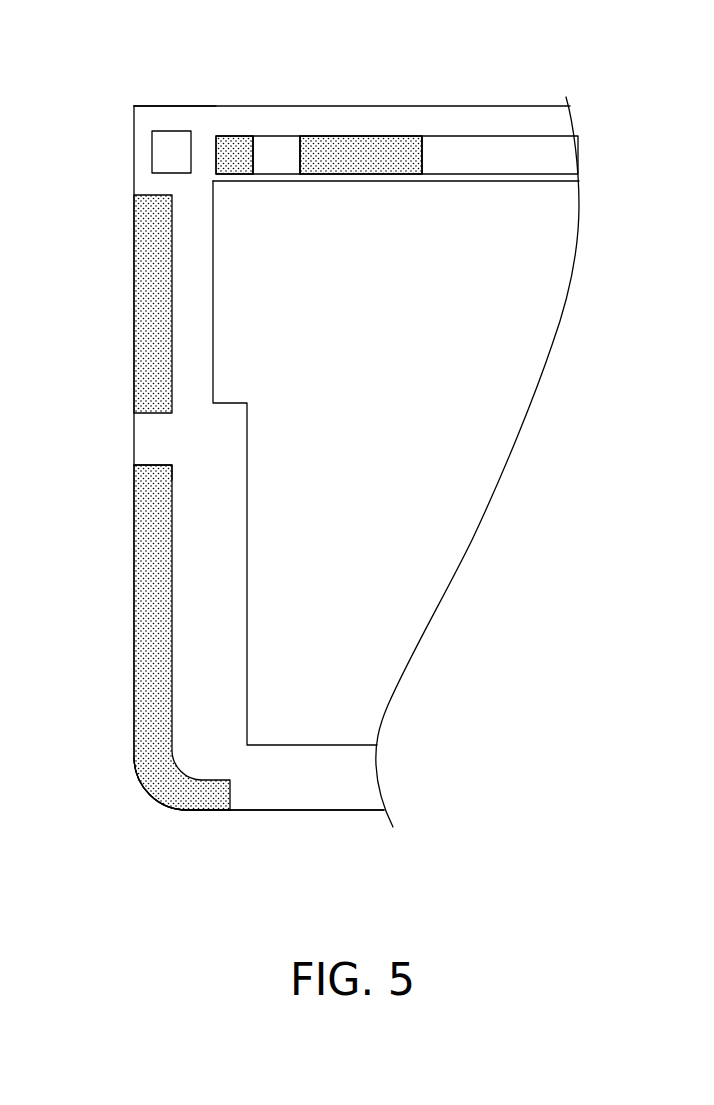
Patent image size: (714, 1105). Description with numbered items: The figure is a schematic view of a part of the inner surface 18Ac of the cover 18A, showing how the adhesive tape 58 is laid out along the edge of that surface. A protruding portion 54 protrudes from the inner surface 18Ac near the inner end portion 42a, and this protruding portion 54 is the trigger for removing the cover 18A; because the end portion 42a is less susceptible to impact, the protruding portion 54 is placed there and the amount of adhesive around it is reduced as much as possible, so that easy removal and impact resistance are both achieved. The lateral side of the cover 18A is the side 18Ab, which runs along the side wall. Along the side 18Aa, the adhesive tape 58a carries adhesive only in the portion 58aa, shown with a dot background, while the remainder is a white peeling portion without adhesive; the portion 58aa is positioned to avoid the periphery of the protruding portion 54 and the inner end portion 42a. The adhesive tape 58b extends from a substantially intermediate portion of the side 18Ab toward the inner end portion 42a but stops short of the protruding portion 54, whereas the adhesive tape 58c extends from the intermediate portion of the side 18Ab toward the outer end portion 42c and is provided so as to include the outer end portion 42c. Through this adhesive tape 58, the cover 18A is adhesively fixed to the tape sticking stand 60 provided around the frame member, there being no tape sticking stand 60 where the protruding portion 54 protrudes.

The cover 18A is at (582, 72).
The side 18Aa is at (472, 105).
The side 18Ab is at (135, 435).
The inner surface 18Ac is at (335, 712).
The inner end portion 42a is at (160, 117).
The outer end portion 42c is at (175, 770).
The protruding portion 54 is at (160, 150).
The adhesive tape 58 is at (305, 414).
The adhesive tape 58a is at (332, 153).
The portion with adhesive 58aa is at (233, 153).
The adhesive tape 58b is at (150, 301).
The adhesive tape 58c is at (150, 601).
The tape sticking stand 60 is at (162, 455).